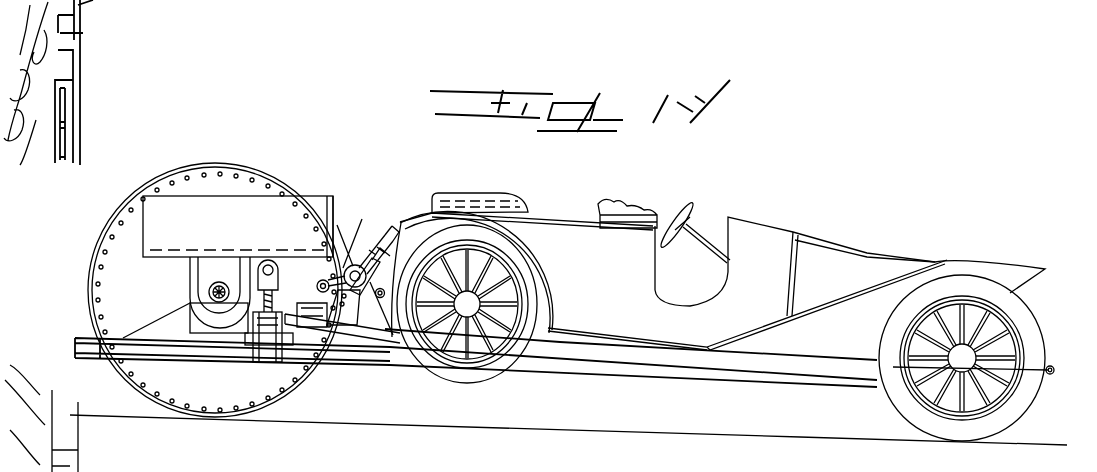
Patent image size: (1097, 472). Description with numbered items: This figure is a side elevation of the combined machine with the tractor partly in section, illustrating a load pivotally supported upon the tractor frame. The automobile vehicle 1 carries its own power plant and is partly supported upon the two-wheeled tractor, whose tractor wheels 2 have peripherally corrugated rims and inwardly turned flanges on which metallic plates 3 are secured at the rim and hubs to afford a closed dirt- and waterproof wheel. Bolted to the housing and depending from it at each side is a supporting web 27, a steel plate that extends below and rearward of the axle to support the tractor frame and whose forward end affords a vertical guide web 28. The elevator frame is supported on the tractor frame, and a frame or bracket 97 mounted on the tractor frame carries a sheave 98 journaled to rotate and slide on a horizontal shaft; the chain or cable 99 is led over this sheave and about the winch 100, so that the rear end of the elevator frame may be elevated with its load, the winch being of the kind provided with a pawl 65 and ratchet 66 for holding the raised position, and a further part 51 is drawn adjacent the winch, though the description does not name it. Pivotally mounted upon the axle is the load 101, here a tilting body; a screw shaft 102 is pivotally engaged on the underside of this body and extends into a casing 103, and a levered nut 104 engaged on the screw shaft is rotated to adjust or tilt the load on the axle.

The automobile vehicle 1 is at (568, 255).
The tractor wheels 2 is at (215, 271).
The metallic plates 3 is at (197, 172).
The supporting web 27 is at (176, 323).
The vertical guide web 28 is at (327, 240).
The link 51 is at (383, 250).
The pawl 65 is at (374, 273).
The ratchet 66 is at (395, 282).
The frame or bracket 97 is at (383, 337).
The sheave 98 is at (333, 305).
The chain or cable 99 is at (352, 242).
The winch 100 is at (366, 266).
The load 101 is at (160, 210).
The screw shaft 102 is at (319, 282).
The casing 103 is at (270, 335).
The levered nut 104 is at (245, 333).